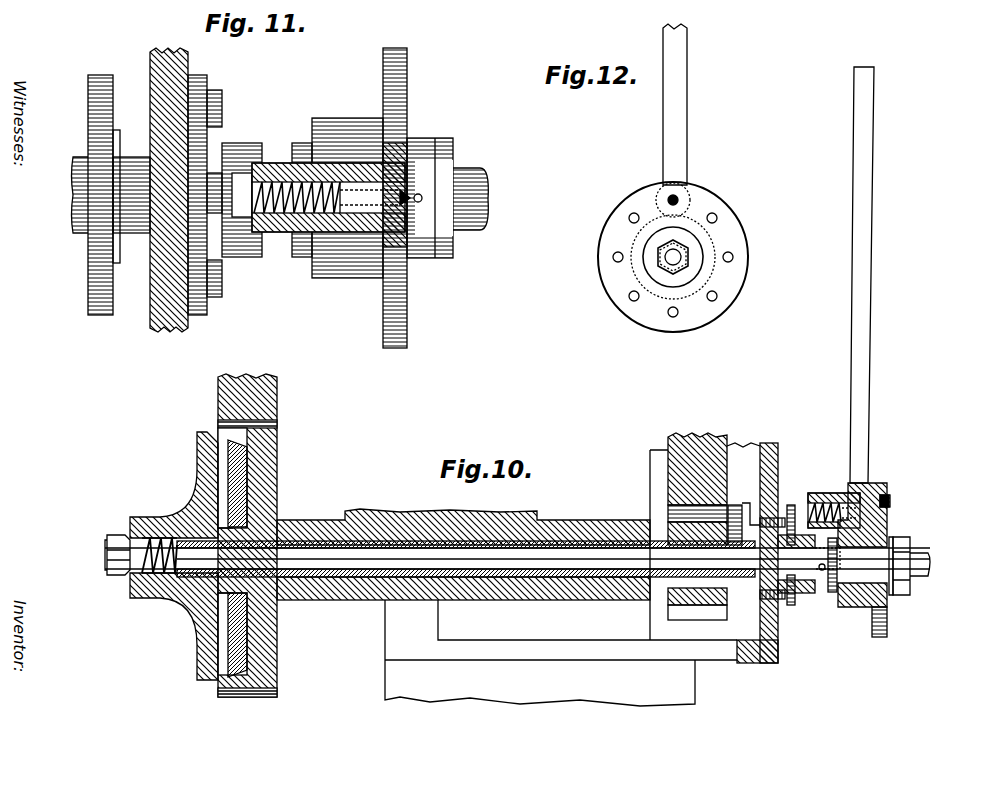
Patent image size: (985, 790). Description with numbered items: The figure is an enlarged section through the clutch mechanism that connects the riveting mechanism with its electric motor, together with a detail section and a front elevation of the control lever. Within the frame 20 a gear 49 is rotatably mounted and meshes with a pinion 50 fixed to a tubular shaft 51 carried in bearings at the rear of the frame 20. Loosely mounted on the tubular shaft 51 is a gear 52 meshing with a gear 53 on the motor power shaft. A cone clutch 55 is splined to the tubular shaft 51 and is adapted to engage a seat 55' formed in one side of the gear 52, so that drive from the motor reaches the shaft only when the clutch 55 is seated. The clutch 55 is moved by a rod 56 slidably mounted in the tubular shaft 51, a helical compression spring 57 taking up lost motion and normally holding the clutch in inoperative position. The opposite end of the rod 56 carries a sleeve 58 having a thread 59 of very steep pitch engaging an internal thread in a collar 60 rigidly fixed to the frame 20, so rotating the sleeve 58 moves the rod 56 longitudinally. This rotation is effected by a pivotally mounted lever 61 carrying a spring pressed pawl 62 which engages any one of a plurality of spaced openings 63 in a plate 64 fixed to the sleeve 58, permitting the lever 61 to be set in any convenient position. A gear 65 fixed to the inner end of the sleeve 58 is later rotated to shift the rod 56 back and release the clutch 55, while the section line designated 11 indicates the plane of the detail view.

In FIG. 10, the pin / arrow direction indicator 11 is at (736, 496).
In FIG. 11, the frame 20 is at (190, 316).
In FIG. 10, the frame 20 is at (372, 480).
In FIG. 10, the gear 49 is at (700, 442).
In FIG. 10, the pinion 50 is at (680, 516).
In FIG. 10, the tubular shaft 51 is at (550, 578).
In FIG. 10, the gear 52 is at (278, 483).
In FIG. 10, the gear 53 is at (278, 393).
In FIG. 10, the cone clutch 55 is at (174, 556).
In FIG. 10, the seat 55' is at (278, 550).
In FIG. 11, the rod 56 is at (488, 200).
In FIG. 12, the rod 56 is at (680, 257).
In FIG. 10, the rod 56 is at (395, 560).
In FIG. 10, the helical compression spring 57 is at (160, 580).
In FIG. 11, the sleeve 58 is at (75, 212).
In FIG. 10, the sleeve 58 is at (800, 595).
In FIG. 10, the thread 59 is at (746, 662).
In FIG. 11, the collar 60 is at (256, 257).
In FIG. 10, the collar 60 is at (808, 600).
In FIG. 11, the lever 61 is at (368, 177).
In FIG. 12, the lever 61 is at (680, 120).
In FIG. 10, the lever 61 is at (870, 317).
In FIG. 11, the spring pressed pawl 62 is at (362, 200).
In FIG. 10, the spring pressed pawl 62 is at (850, 510).
In FIG. 11, the openings 63 is at (407, 247).
In FIG. 12, the openings 63 is at (715, 215).
In FIG. 10, the openings 63 is at (885, 497).
In FIG. 11, the plate 64 is at (407, 325).
In FIG. 12, the plate 64 is at (742, 240).
In FIG. 10, the plate 64 is at (889, 525).
In FIG. 11, the gear 65 is at (97, 278).
In FIG. 10, the gear 65 is at (745, 503).